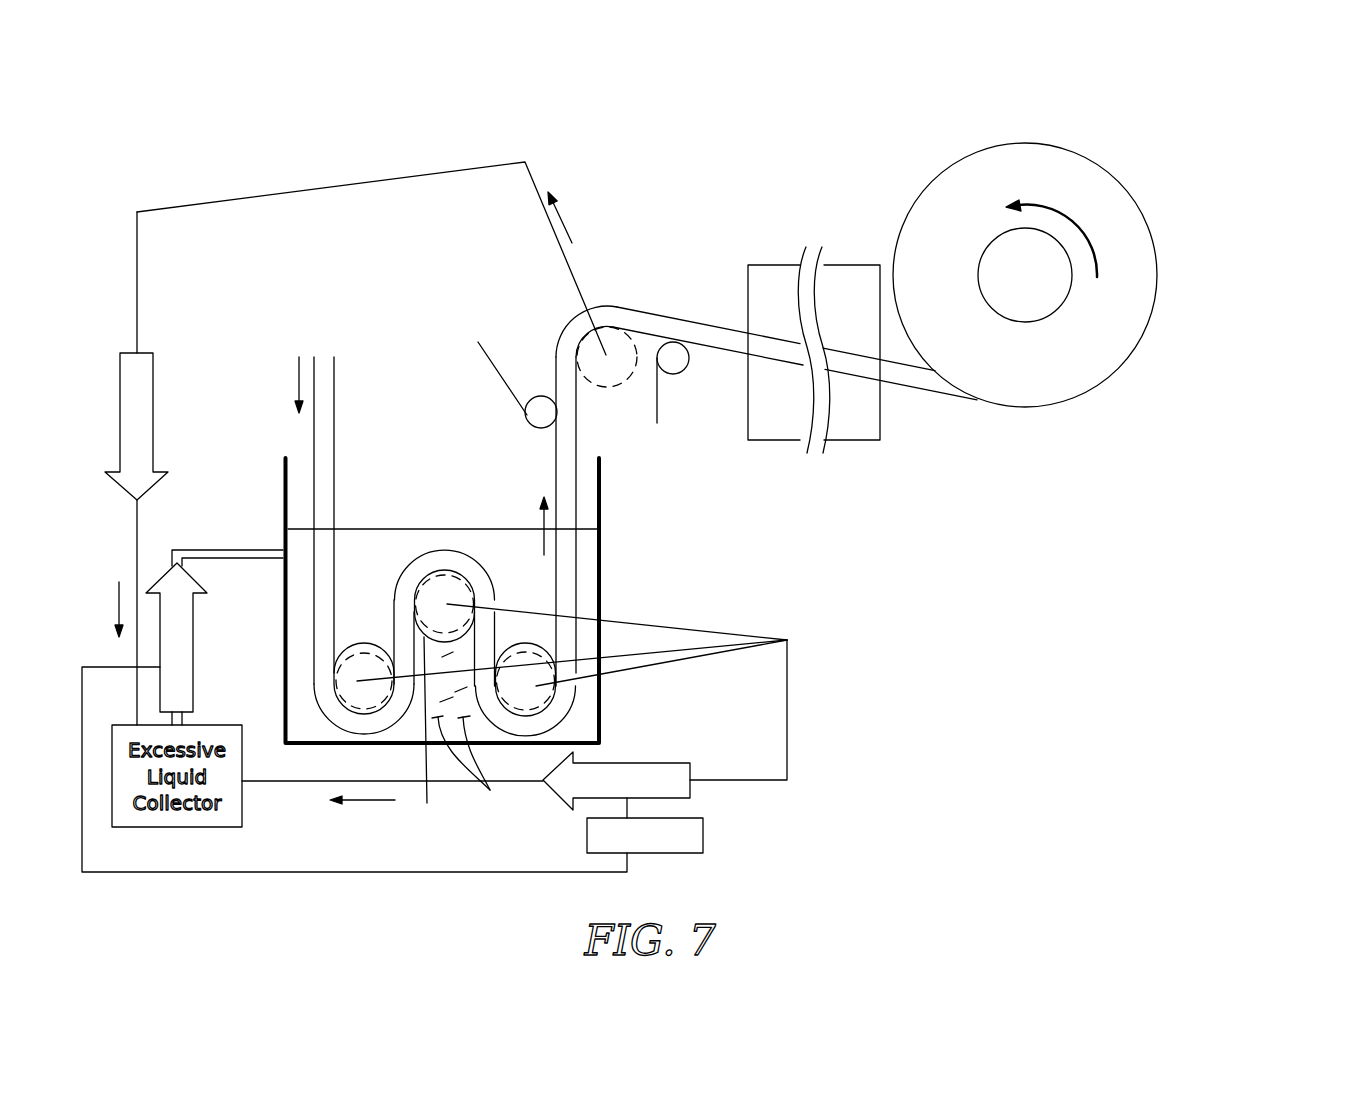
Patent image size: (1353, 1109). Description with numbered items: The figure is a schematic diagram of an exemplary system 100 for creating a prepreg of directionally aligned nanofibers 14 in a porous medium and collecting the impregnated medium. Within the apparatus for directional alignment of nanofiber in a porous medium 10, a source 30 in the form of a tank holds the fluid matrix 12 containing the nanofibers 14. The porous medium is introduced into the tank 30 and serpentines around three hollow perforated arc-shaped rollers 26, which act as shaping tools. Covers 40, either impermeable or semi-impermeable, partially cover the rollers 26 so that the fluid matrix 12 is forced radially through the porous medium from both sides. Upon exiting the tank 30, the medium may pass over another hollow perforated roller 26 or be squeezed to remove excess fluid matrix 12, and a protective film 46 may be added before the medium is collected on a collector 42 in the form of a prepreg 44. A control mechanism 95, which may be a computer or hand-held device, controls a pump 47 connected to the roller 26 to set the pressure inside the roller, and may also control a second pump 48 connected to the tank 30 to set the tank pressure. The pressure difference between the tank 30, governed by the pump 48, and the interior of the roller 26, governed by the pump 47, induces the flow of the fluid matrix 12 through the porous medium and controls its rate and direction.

The apparatus for directional alignment of nanofiber in a porous medium 10 is at (1256, 123).
The system 100 is at (642, 163).
The fluid matrix 12 is at (305, 733).
The nanofibers 14 is at (490, 790).
The hollow perforated arc-shaped roller 26 is at (353, 695).
The source 30 is at (283, 647).
The covers 40 is at (358, 642).
The collector 42 is at (1138, 205).
The prepreg 44 is at (1103, 347).
The protective film 46 is at (498, 368).
The pump 47 is at (155, 405).
The second pump 48 is at (195, 618).
The control mechanism 95 is at (703, 835).